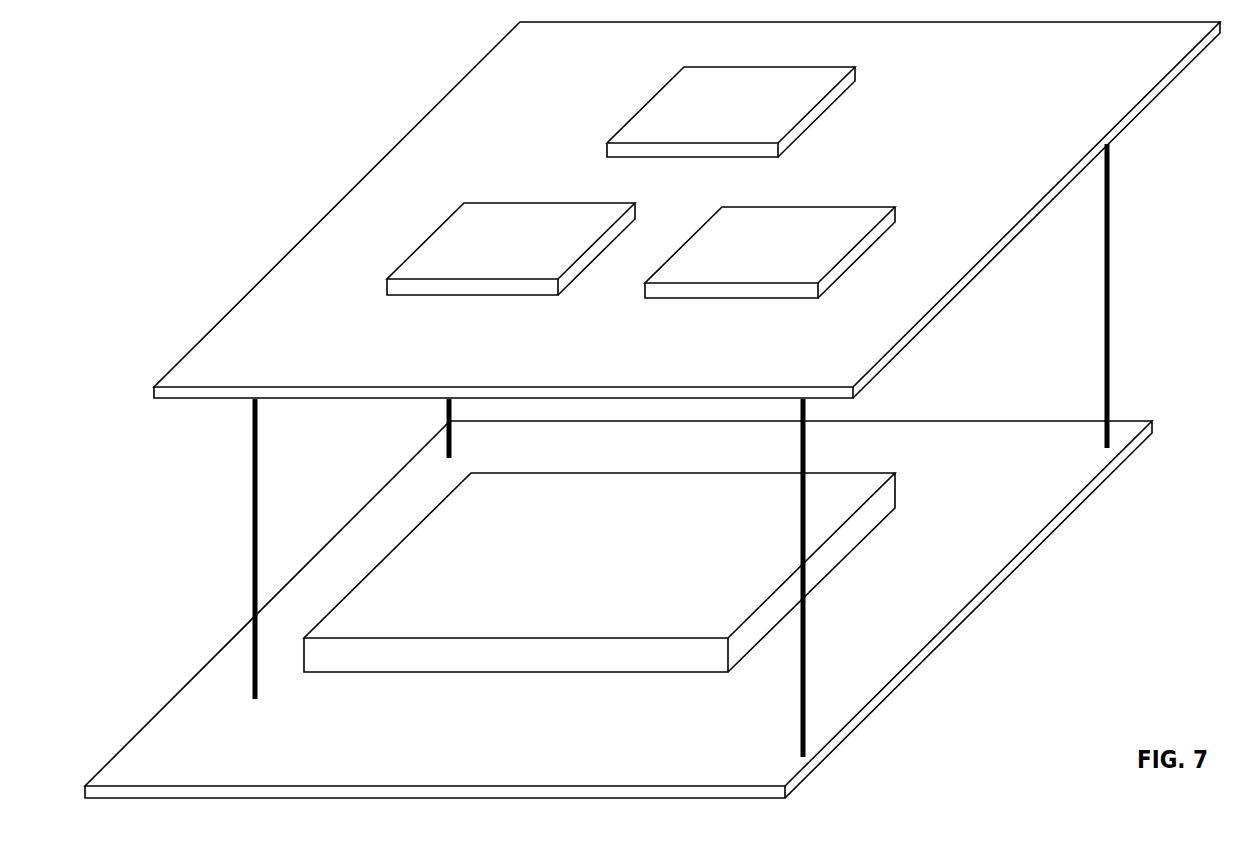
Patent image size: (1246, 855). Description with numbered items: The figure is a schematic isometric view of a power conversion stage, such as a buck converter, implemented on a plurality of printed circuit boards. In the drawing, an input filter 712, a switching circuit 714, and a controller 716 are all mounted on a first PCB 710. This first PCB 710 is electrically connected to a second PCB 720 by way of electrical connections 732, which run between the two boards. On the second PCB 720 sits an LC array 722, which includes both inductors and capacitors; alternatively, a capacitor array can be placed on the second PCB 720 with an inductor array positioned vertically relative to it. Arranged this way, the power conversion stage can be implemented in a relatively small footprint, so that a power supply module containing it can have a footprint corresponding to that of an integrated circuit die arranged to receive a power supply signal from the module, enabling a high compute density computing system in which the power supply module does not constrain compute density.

The first PCB 710 is at (622, 355).
The input filter 712 is at (508, 203).
The switching circuit 714 is at (870, 206).
The controller 716 is at (780, 67).
The second PCB 720 is at (536, 723).
The LC array 722 is at (538, 613).
The electrical connections 732 is at (1109, 294).